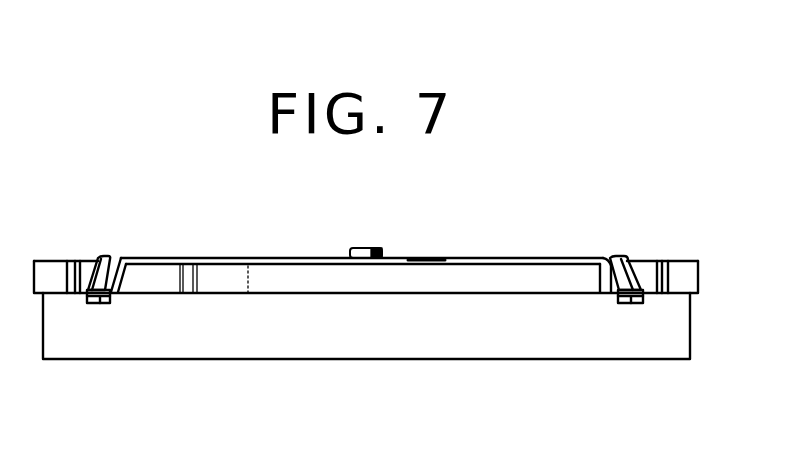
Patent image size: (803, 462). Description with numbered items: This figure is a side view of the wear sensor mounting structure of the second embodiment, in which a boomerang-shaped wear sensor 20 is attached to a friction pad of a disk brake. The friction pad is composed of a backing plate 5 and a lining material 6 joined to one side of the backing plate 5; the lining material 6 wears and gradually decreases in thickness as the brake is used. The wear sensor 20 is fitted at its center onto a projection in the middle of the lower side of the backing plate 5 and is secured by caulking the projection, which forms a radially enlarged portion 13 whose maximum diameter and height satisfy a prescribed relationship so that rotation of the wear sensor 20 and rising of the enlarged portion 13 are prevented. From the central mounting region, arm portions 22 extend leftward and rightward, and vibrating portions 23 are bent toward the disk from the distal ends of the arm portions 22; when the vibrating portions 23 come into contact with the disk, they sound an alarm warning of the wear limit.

The backing plate 5 is at (490, 280).
The lining material 6 is at (365, 333).
The radially enlarged portion 13 is at (366, 251).
The wear sensor 20 is at (252, 258).
The arm portions 22 is at (503, 258).
The vibrating portions 23 is at (100, 303).